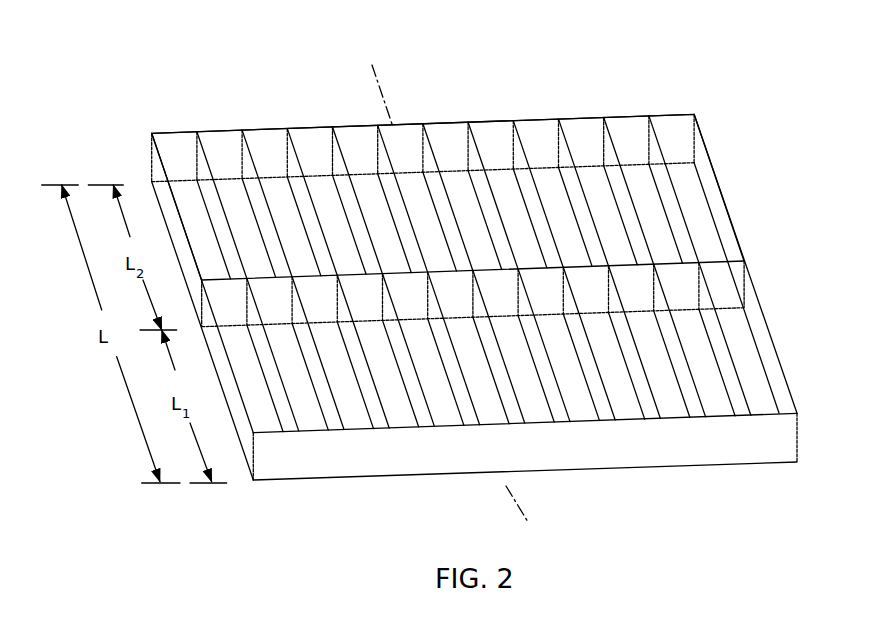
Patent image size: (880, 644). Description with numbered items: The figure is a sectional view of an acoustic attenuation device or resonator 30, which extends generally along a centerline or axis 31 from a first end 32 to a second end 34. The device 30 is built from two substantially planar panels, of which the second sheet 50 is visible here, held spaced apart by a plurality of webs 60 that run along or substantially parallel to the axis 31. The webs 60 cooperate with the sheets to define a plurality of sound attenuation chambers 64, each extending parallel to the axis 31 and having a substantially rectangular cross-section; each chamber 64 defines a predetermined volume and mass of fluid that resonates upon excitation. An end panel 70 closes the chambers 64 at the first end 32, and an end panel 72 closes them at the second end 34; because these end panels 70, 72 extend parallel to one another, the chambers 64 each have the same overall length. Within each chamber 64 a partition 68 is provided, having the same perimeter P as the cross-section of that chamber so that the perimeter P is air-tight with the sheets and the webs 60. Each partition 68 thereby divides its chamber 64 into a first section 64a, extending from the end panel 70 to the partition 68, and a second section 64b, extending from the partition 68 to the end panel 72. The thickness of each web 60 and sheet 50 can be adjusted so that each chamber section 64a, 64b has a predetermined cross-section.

The acoustic attenuation device 30 is at (801, 282).
The axis 31 is at (378, 83).
The first end 32 is at (684, 472).
The second end 34 is at (165, 113).
The second sheet 50 is at (687, 172).
The web 60 is at (478, 147).
The sound attenuation chamber 64 is at (690, 200).
The first section 64a is at (753, 374).
The second section 64b is at (705, 235).
The partition 68 is at (730, 273).
The end panel 70 is at (788, 438).
The end panel 72 is at (625, 128).
The perimeter P is at (720, 260).